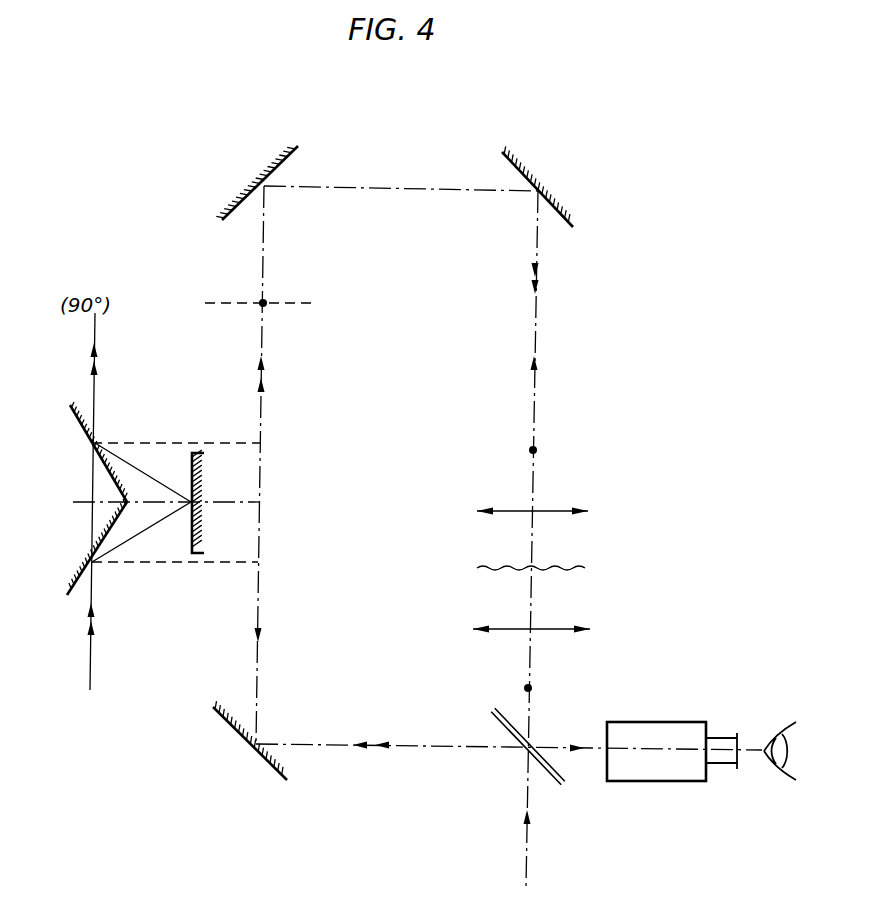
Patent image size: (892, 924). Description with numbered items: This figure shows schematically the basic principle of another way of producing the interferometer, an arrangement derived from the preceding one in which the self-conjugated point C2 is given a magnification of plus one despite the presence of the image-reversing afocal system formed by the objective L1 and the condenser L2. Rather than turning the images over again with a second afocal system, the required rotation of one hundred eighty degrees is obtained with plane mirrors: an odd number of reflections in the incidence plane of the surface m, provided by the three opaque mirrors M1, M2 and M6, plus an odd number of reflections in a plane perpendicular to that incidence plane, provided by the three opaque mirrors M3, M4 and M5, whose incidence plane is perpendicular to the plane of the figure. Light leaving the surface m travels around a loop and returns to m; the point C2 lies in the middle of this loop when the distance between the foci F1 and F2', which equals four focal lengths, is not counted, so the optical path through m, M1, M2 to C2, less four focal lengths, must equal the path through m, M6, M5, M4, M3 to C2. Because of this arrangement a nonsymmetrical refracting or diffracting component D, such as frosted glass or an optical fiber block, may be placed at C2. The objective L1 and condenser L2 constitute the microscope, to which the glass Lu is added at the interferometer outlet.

The opaque mirror M1 is at (539, 186).
The opaque mirror M2 is at (256, 183).
The opaque mirror M3 is at (90, 452).
The opaque mirror M4 is at (214, 501).
The opaque mirror M5 is at (90, 547).
The opaque mirror M6 is at (247, 741).
The self-conjugated point C2 is at (265, 301).
The refracting or diffracting component D is at (247, 304).
The focal point of condenser L2 F2' is at (552, 456).
The focal point of objective L1 F1 is at (543, 692).
The condenser L2 is at (547, 516).
The objective L1 is at (544, 636).
The surface m is at (553, 783).
The glass Lu is at (673, 782).